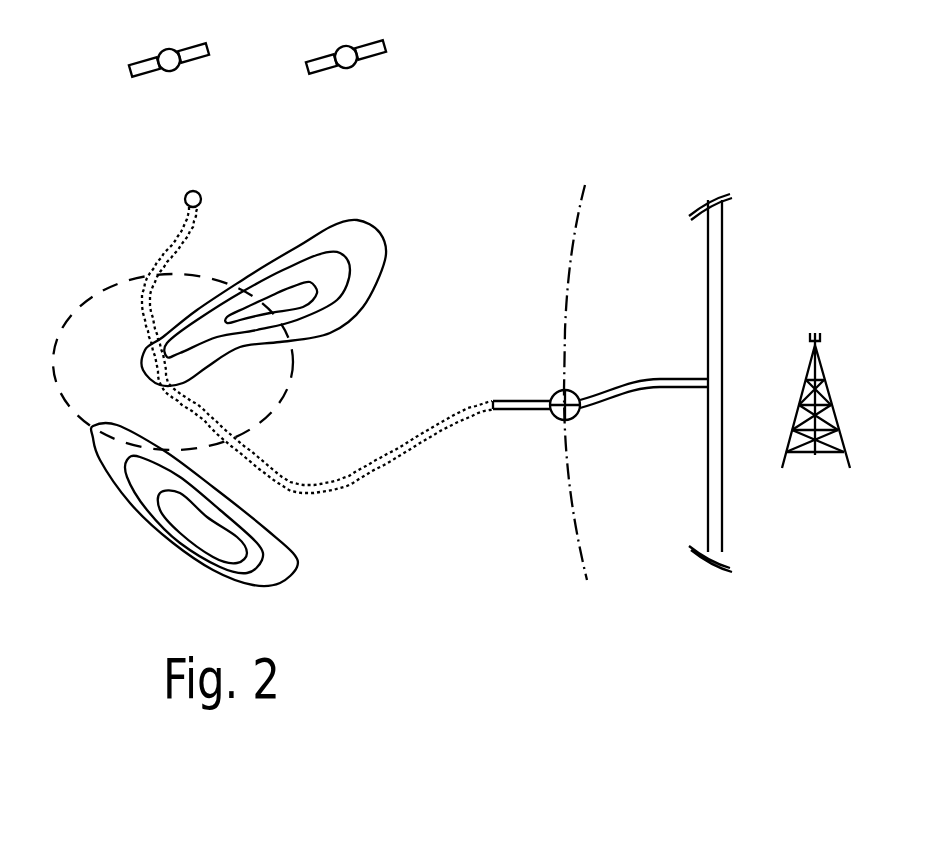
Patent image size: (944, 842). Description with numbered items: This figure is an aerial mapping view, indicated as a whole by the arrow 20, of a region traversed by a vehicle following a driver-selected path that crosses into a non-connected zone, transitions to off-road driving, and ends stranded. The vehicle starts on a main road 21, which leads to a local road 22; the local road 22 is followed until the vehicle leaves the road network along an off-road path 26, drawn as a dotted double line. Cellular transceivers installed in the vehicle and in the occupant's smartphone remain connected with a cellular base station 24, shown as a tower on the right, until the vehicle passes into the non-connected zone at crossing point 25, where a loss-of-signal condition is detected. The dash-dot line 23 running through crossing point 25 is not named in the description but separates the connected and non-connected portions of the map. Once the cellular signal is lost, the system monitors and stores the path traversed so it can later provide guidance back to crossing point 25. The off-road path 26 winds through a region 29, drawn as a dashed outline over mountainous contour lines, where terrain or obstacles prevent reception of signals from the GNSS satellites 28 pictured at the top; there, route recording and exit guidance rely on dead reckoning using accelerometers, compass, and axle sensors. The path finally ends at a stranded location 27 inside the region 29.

The map display / navigation scenario 20 is at (465, 595).
The main road 21 is at (717, 271).
The local road 22 is at (657, 380).
The boundary line of mapped area 23 is at (572, 232).
The cellular base station 24 is at (805, 455).
The crossing point 25 is at (556, 393).
The off-road path 26 is at (417, 430).
The stranded location 27 is at (186, 194).
The GNSS satellites 28 is at (183, 70).
The region 29 is at (83, 302).